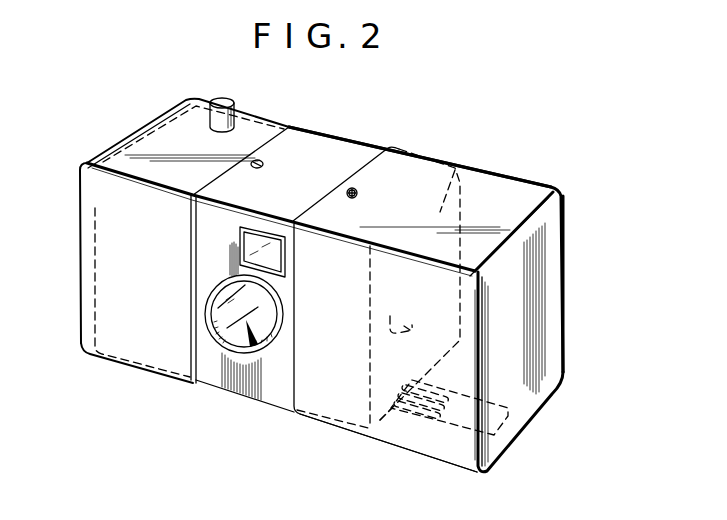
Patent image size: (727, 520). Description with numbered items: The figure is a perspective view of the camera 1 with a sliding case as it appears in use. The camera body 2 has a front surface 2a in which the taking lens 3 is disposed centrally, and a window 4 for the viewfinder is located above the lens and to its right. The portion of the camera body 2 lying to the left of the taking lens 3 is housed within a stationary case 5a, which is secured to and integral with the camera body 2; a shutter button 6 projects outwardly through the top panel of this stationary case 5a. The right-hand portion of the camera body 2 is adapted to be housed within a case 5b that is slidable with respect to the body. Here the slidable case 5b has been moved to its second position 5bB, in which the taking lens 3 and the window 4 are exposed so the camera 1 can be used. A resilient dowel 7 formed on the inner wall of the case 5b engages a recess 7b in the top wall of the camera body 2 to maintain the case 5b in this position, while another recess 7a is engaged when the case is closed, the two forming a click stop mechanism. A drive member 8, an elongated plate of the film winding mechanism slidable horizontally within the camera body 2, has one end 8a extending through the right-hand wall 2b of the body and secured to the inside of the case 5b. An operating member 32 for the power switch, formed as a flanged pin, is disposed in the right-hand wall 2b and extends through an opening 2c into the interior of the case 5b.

The camera 1 is at (366, 134).
The camera body 2 is at (303, 141).
The front surface 2a is at (283, 355).
The right-hand wall 2b is at (440, 216).
The opening 2c is at (390, 316).
The taking lens 3 is at (215, 340).
The window 4 is at (258, 243).
The stationary case 5a is at (97, 223).
The case 5b is at (556, 299).
The second position 5bB is at (399, 419).
The shutter button 6 is at (240, 93).
The dowel 7 is at (346, 199).
The recess 7a is at (262, 167).
The recess 7b is at (352, 188).
The drive member 8 is at (448, 420).
The end of drive member 8a is at (503, 421).
The operating member 32 is at (413, 327).